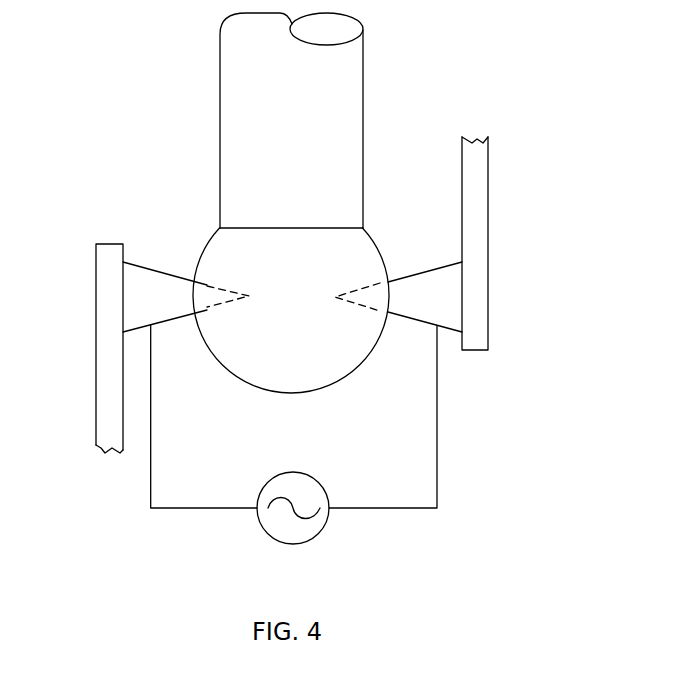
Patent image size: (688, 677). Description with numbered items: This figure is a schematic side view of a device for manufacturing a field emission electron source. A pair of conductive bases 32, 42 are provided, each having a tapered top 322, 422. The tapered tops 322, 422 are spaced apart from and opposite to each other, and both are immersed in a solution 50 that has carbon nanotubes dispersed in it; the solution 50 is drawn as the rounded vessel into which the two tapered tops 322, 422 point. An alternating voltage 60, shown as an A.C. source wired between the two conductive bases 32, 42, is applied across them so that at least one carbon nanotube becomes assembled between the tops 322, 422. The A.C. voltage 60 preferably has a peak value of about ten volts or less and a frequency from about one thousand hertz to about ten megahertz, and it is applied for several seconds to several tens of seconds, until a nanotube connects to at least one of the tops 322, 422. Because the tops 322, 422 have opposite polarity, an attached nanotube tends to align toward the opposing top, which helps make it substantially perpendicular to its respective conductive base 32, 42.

The solution 50 is at (221, 258).
The conductive base 32 is at (135, 295).
The tapered top 322 is at (205, 280).
The conductive base 42 is at (450, 295).
The tapered top 422 is at (383, 280).
The alternating voltage 60 is at (307, 525).